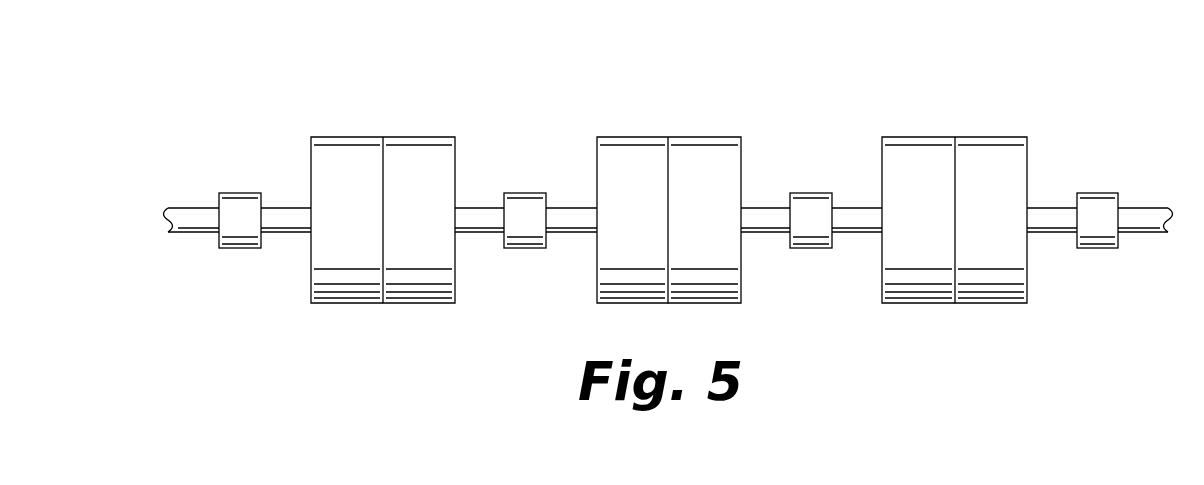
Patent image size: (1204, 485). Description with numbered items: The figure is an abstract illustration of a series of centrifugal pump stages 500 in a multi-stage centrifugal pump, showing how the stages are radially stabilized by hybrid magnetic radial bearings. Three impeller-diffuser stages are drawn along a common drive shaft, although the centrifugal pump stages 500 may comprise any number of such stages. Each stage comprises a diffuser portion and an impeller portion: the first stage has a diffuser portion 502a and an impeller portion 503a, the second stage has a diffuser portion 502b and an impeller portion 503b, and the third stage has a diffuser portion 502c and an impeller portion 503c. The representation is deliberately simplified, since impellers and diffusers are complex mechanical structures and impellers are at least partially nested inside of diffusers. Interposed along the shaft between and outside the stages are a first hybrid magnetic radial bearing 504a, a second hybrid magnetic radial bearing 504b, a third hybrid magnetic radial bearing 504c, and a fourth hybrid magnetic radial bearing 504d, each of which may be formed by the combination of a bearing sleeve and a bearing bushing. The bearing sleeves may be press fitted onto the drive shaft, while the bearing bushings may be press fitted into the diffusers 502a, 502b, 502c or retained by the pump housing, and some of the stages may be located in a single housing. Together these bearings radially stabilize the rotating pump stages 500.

The centrifugal pump stages 500 is at (1072, 54).
The diffuser portion 502a is at (342, 137).
The impeller portion 503a is at (422, 137).
The diffuser portion 502b is at (627, 137).
The impeller portion 503b is at (707, 137).
The diffuser portion 502c is at (913, 137).
The impeller portion 503c is at (993, 137).
The first hybrid magnetic radial bearing 504a is at (240, 193).
The second hybrid magnetic radial bearing 504b is at (525, 193).
The third hybrid magnetic radial bearing 504c is at (810, 193).
The fourth hybrid magnetic radial bearing 504d is at (1098, 193).